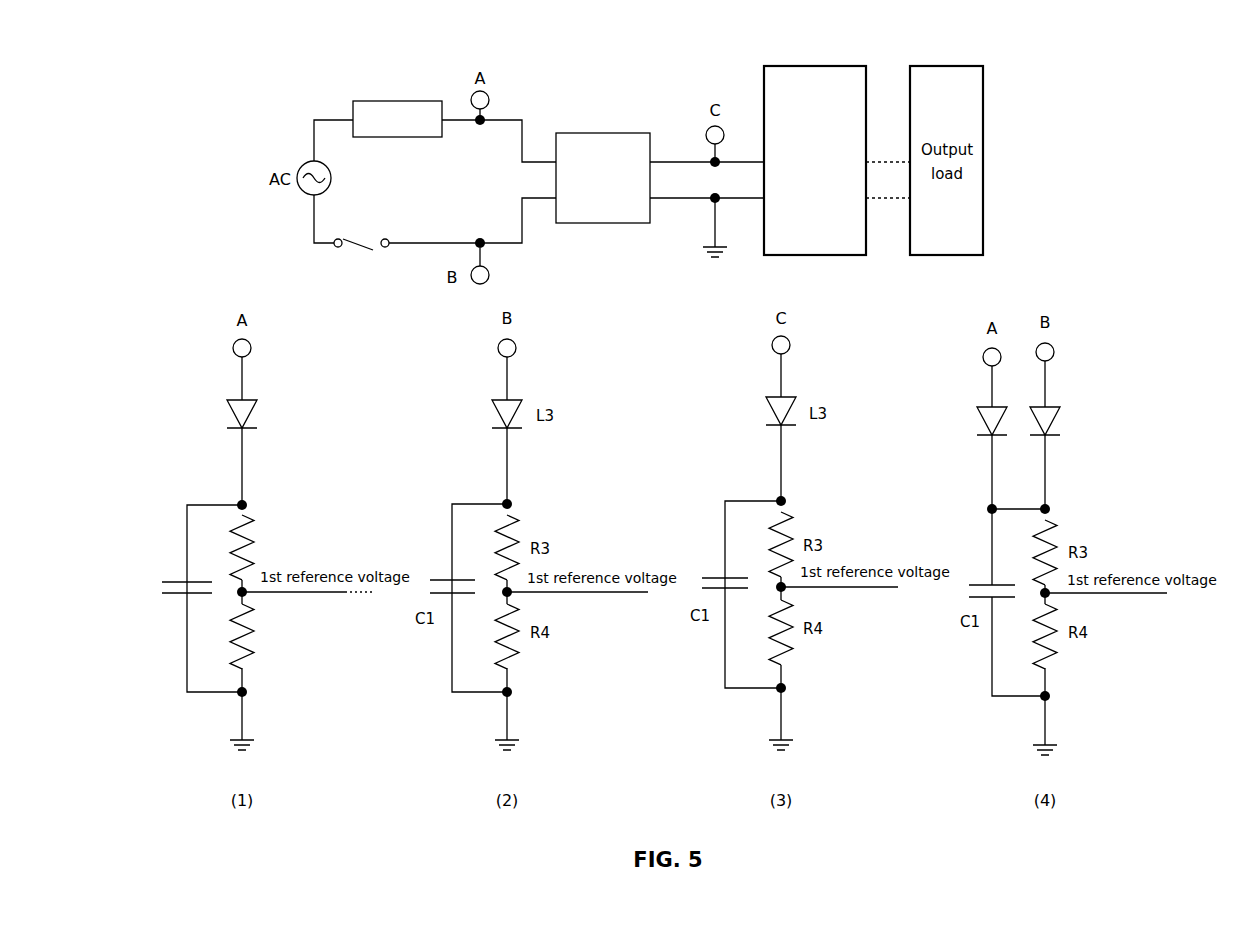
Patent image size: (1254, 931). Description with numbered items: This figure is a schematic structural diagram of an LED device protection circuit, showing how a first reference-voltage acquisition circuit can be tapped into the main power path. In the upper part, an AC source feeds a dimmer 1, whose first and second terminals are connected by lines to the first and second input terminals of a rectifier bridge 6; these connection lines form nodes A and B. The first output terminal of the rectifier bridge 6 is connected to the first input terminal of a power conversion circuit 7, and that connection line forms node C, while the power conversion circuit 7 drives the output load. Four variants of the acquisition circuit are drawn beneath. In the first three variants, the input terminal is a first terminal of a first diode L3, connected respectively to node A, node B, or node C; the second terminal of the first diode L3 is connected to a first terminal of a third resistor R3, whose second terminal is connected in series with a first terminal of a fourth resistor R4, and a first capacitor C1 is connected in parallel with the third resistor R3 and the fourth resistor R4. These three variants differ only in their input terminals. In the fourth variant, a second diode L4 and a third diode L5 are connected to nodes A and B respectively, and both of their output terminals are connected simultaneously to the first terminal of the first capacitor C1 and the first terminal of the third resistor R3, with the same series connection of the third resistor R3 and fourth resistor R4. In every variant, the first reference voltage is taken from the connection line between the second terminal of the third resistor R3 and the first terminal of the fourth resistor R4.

The dimmer 1 is at (400, 100).
The rectifier bridge 6 is at (600, 133).
The power conversion circuit 7 is at (805, 62).
The first diode L3 is at (260, 414).
The second diode L4 is at (975, 421).
The third diode L5 is at (1059, 421).
The third resistor R3 is at (257, 547).
The fourth resistor R4 is at (257, 636).
The first capacitor C1 is at (166, 586).